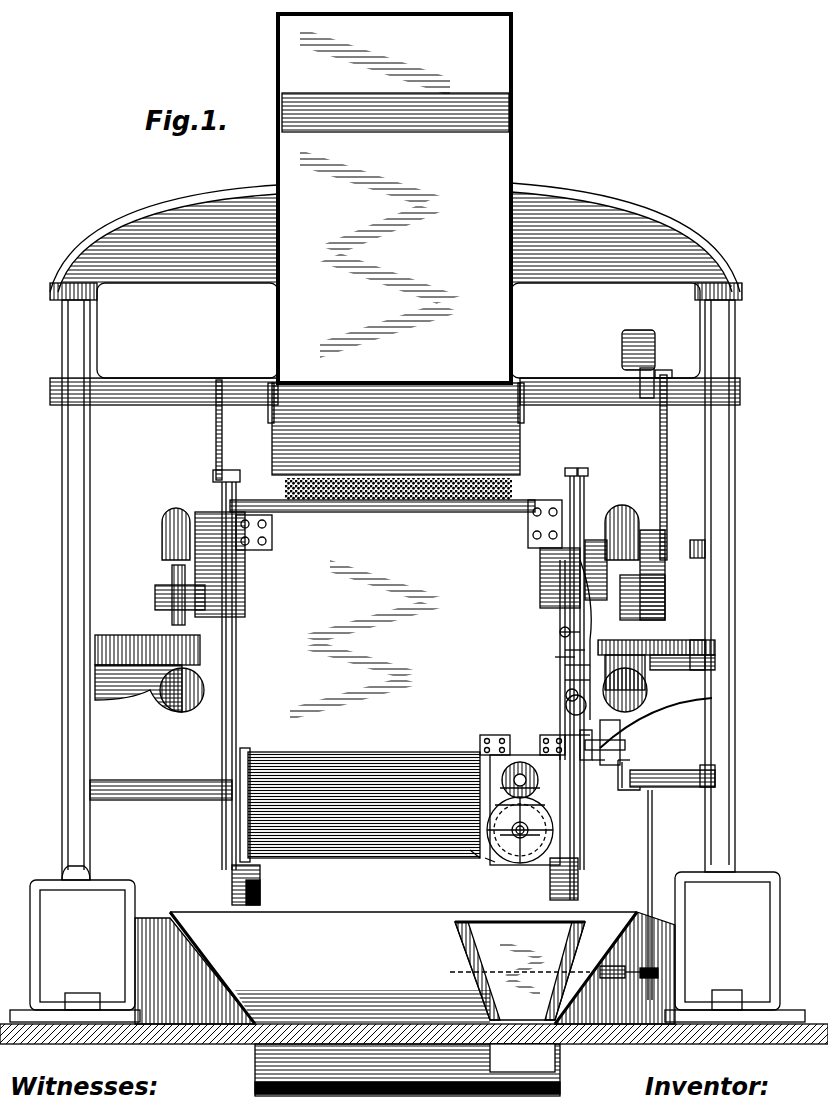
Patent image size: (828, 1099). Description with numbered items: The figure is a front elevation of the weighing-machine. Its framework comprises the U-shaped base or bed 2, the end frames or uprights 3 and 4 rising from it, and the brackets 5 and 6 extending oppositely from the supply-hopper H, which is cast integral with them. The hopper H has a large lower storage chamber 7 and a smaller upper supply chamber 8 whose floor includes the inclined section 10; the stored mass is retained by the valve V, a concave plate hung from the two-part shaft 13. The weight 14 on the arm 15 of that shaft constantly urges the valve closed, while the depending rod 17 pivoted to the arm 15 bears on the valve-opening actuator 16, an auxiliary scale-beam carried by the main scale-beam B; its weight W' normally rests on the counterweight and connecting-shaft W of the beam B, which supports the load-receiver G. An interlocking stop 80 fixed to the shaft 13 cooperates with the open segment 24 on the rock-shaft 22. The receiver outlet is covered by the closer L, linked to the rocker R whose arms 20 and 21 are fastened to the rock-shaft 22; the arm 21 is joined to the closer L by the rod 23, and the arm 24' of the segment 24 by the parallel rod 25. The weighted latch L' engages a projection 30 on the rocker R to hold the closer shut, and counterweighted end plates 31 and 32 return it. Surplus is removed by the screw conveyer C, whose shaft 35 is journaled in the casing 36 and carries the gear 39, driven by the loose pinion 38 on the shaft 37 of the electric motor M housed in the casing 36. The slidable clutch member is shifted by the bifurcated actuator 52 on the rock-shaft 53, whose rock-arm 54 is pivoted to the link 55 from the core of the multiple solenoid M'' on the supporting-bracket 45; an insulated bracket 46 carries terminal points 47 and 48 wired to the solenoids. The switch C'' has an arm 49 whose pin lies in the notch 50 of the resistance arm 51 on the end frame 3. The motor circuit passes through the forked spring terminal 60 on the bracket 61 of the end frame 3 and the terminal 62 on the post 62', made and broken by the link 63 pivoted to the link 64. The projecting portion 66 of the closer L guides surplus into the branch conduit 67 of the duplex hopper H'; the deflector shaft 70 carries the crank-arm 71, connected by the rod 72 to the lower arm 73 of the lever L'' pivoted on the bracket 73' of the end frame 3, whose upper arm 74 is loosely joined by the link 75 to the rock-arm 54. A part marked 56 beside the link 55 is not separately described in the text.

The supporting base or bed 2 is at (407, 944).
The end frame or upright 3 is at (730, 452).
The end frame or upright 4 is at (66, 461).
The bracket 5 is at (571, 194).
The bracket 6 is at (188, 203).
The lower chamber of hopper 7 is at (282, 294).
The upper chamber of hopper 8 is at (378, 198).
The inclined floor section 10 is at (375, 106).
The two-part supporting-shaft 13 is at (154, 378).
The weight 14 is at (645, 332).
The arm 15 is at (642, 392).
The valve-opening actuator 16 is at (662, 556).
The depending rod 17 is at (666, 462).
The arm of rocker 20 is at (546, 556).
The arm of rocker 21 is at (571, 468).
The rock-shaft 22 is at (390, 500).
The intermediate rod 23 is at (586, 498).
The open or skeleton segment 24 is at (217, 521).
The arm of segment 24' is at (203, 464).
The rod 25 is at (234, 640).
The projection on rocker 30 is at (560, 618).
The counterweighted end plate 31 is at (578, 886).
The counterweighted end plate 32 is at (234, 866).
The conveyer-shaft 35 is at (520, 850).
The casing 36 is at (472, 850).
The motor-shaft 37 is at (495, 808).
The loose pinion 38 is at (500, 786).
The gear 39 is at (505, 835).
The supporting-bracket 45 is at (587, 745).
The insulated bracket 46 is at (565, 680).
The terminal point 47 is at (565, 666).
The terminal point 48 is at (565, 650).
The arm of switch 49 is at (560, 632).
The notch or recess 50 is at (665, 606).
The resistance member or arm 51 is at (702, 655).
The clutch actuator 52 is at (540, 756).
The transverse rock-shaft 53 is at (482, 746).
The rock-arm 54 is at (580, 740).
The link 55 is at (566, 694).
The link 56 is at (555, 657).
The terminal 60 is at (612, 730).
The bracket 61 is at (660, 746).
The terminal 62 is at (638, 683).
The post 62' is at (644, 736).
The make-and-break device 63 is at (695, 665).
The link 64 is at (606, 652).
The projecting portion of closer 66 is at (488, 860).
The branch conduit 67 is at (470, 932).
The supporting-shaft of deflector 70 is at (624, 976).
The crank-arm 71 is at (652, 976).
The link or rod 72 is at (649, 882).
The lower arm of lever 73 is at (666, 783).
The bracket or extension 73' is at (732, 754).
The upper arm of lever 74 is at (620, 792).
The link 75 is at (596, 762).
The interlocking stop 80 is at (215, 412).
The scale-beam B is at (175, 606).
The conveyer C is at (520, 845).
The circuit-controller or switch C'' is at (549, 631).
The load-receiver G is at (365, 640).
The supply-hopper H is at (380, 193).
The duplex hopper H' is at (405, 968).
The closer L is at (403, 830).
The latch L' is at (627, 779).
The lever L'' is at (596, 570).
The electric motor M is at (507, 810).
The multiple solenoid M'' is at (563, 704).
The rocker R is at (545, 509).
The valve V is at (368, 392).
The combined counterweight and connecting-shaft W is at (220, 582).
The weight of auxiliary beam W' is at (632, 521).